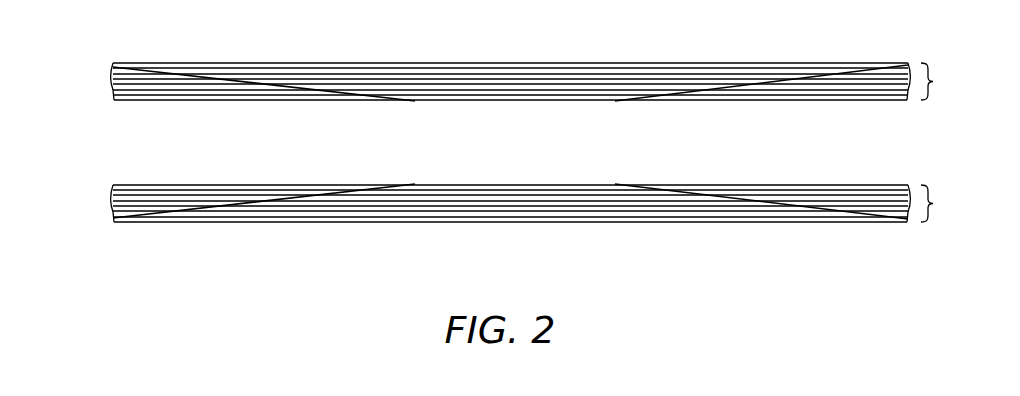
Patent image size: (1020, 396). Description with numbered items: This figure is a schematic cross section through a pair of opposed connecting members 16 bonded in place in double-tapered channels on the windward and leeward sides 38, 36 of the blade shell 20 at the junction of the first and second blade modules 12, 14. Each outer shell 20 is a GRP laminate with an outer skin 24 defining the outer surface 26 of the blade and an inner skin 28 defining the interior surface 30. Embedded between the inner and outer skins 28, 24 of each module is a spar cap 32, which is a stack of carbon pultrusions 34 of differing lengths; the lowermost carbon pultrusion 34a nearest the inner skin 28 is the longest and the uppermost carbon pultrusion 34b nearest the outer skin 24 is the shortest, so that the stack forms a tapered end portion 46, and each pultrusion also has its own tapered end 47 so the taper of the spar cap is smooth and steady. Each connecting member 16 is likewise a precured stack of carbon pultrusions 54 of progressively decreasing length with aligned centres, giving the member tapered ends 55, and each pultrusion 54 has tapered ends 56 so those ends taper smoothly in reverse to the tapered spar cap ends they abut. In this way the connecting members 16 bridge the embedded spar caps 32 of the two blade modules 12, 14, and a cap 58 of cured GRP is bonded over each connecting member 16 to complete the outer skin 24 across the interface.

The first blade module 12 is at (208, 255).
The second blade module 14 is at (815, 255).
The connecting member 16 is at (560, 92).
The outer shell 20 is at (940, 142).
The outer skin 24 is at (627, 72).
The outer surface 26 is at (670, 58).
The inner skin 28 is at (278, 103).
The interior surface 30 is at (416, 105).
The spar cap 32 is at (175, 97).
The carbon pultrusion 34 is at (148, 80).
The lowermost carbon pultrusion 34a is at (330, 100).
The uppermost carbon pultrusion 34b is at (125, 75).
The leeward side 36 is at (106, 84).
The windward side 38 is at (106, 208).
The tapered end portion 46 is at (233, 73).
The tapered end 47 is at (653, 102).
The carbon pultrusion 54 is at (447, 71).
The tapered end 55 is at (288, 85).
The tapered end 56 is at (698, 192).
The cap 58 is at (506, 63).